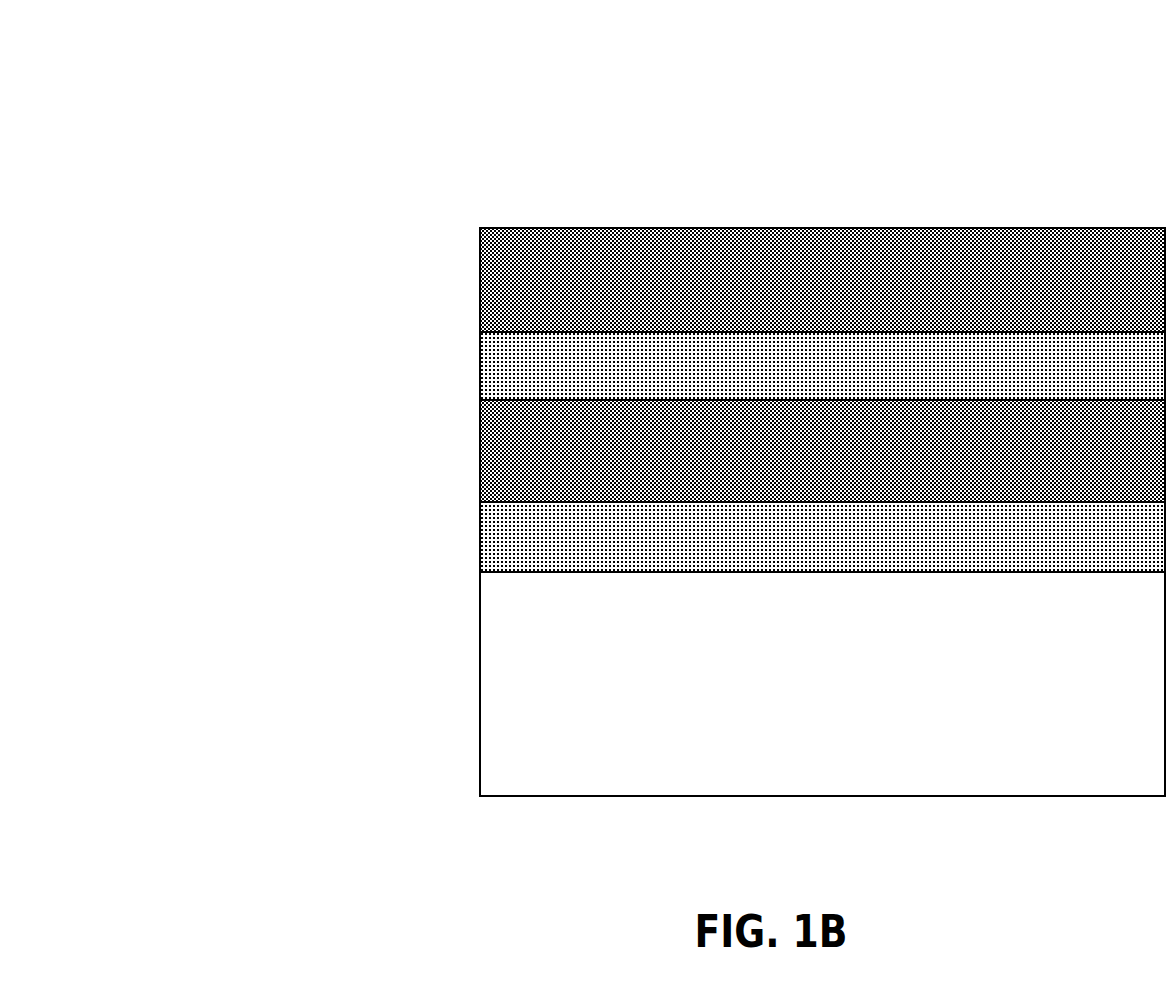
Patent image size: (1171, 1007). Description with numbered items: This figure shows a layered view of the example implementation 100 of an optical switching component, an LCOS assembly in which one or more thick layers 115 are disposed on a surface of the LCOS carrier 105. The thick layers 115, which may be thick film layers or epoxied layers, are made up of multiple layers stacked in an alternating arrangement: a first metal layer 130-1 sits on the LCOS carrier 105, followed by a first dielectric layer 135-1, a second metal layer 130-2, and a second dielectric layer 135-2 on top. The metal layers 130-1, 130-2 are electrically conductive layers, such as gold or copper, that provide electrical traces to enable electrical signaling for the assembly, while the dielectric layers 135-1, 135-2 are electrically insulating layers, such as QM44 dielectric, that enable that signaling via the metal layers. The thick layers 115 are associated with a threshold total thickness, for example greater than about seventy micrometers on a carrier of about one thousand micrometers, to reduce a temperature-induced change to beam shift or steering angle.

The example implementation 100 is at (264, 50).
The LCOS carrier 105 is at (803, 707).
The thick layers 115 is at (460, 572).
The metal layer 130-1 is at (791, 561).
The metal layer 130-2 is at (791, 391).
The dielectric layer 135-1 is at (791, 477).
The dielectric layer 135-2 is at (791, 304).